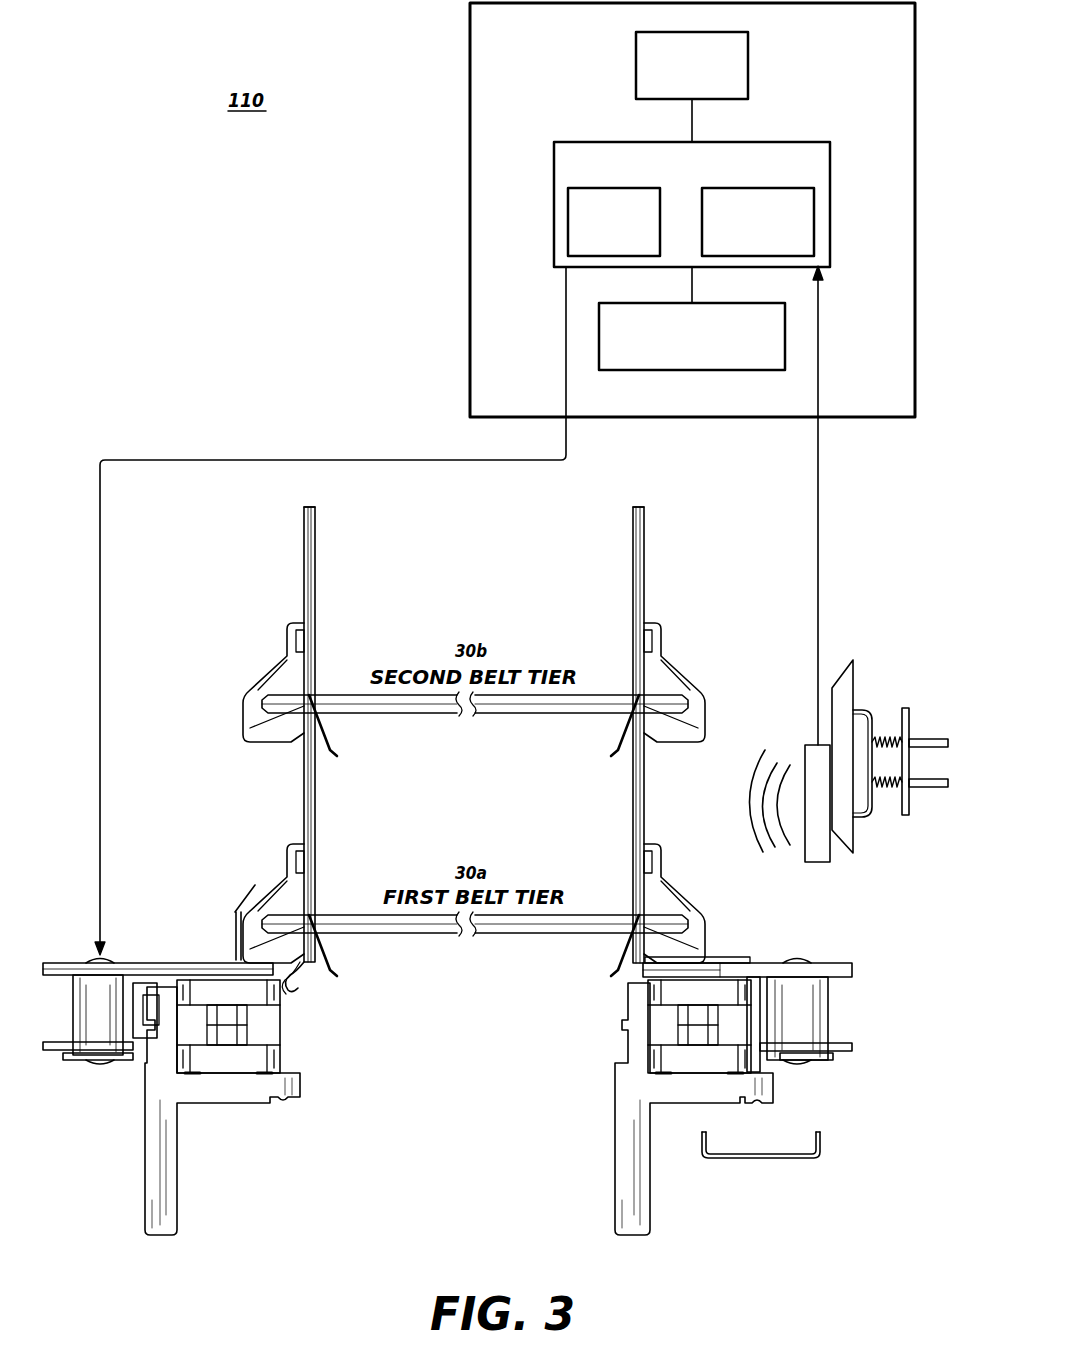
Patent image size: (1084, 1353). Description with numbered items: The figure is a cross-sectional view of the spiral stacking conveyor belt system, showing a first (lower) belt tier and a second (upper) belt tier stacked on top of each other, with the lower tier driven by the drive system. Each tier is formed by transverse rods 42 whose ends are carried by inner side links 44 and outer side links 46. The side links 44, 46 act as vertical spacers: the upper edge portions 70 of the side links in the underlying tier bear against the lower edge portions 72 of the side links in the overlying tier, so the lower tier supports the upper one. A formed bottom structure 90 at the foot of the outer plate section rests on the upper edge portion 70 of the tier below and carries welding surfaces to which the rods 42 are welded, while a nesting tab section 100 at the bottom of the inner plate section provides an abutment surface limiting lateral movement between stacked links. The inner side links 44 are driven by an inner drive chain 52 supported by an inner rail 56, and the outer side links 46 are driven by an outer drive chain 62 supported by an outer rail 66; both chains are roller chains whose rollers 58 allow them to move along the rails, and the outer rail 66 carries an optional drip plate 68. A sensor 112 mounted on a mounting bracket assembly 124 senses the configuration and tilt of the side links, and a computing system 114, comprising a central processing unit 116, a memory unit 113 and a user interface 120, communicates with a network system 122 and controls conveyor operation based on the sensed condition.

The computing system 114 is at (915, 160).
The network system 122 is at (748, 60).
The central processing unit 116 is at (568, 216).
The memory unit 113 is at (814, 212).
The user interface 120 is at (705, 370).
The upper edge portions 70 is at (640, 507).
The inner side links 44 is at (304, 552).
The outer side links 46 is at (644, 567).
The transverse rods 42 is at (585, 695).
The nesting tab section 100 is at (617, 745).
The bottom structure 90 is at (672, 905).
The inner drive chain 52 is at (142, 960).
The inner rail 56 is at (143, 1160).
The rollers 58 is at (258, 1020).
The lower edge portions 72 is at (300, 963).
The outer drive chain 62 is at (770, 954).
The outer rail 66 is at (620, 1145).
The drip plate 68 is at (773, 1158).
The sensor 112 is at (832, 856).
The mounting bracket assembly 124 is at (888, 812).